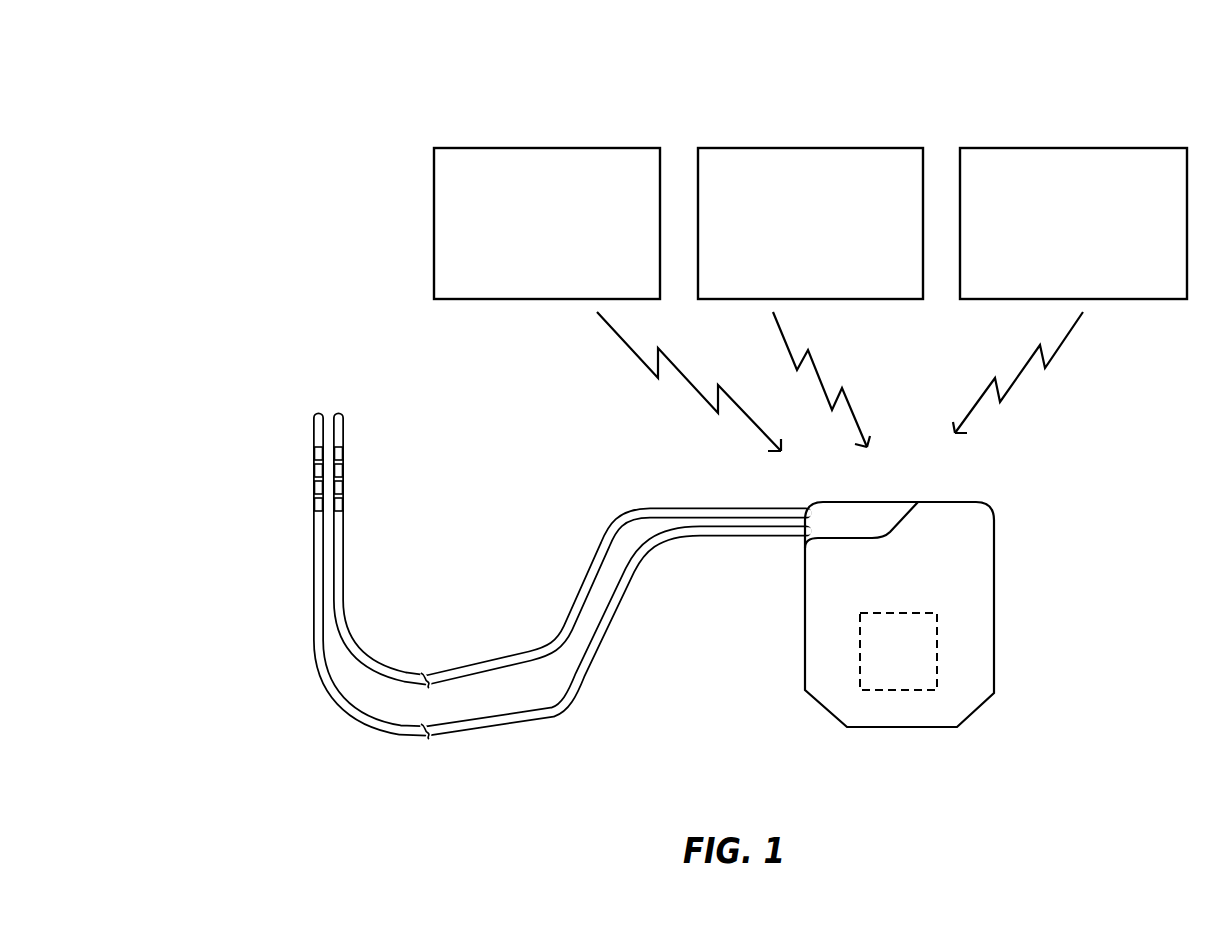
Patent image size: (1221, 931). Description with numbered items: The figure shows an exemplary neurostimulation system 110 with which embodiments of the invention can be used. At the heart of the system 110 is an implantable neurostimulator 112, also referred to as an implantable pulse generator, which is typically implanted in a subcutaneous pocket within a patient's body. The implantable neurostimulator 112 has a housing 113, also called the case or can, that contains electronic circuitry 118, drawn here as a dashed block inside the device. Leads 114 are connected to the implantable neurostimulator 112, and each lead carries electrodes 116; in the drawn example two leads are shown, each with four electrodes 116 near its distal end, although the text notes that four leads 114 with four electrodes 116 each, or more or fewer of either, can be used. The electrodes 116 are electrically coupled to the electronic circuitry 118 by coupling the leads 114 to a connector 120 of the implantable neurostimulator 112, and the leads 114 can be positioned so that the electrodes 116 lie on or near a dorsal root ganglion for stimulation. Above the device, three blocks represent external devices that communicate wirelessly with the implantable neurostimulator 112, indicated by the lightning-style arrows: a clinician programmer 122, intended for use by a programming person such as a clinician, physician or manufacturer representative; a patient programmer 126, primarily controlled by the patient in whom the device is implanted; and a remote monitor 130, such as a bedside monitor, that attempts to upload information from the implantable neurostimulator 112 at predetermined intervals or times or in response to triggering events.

The neurostimulation system 110 is at (288, 98).
The implantable neurostimulator 112 is at (958, 497).
The housing 113 is at (983, 652).
The leads 114 is at (358, 692).
The electrodes 116 is at (313, 452).
The electronic circuitry 118 is at (918, 612).
The connector 120 is at (869, 497).
The clinician programmer 122 is at (530, 271).
The patient programmer 126 is at (793, 271).
The remote monitor 130 is at (1056, 271).